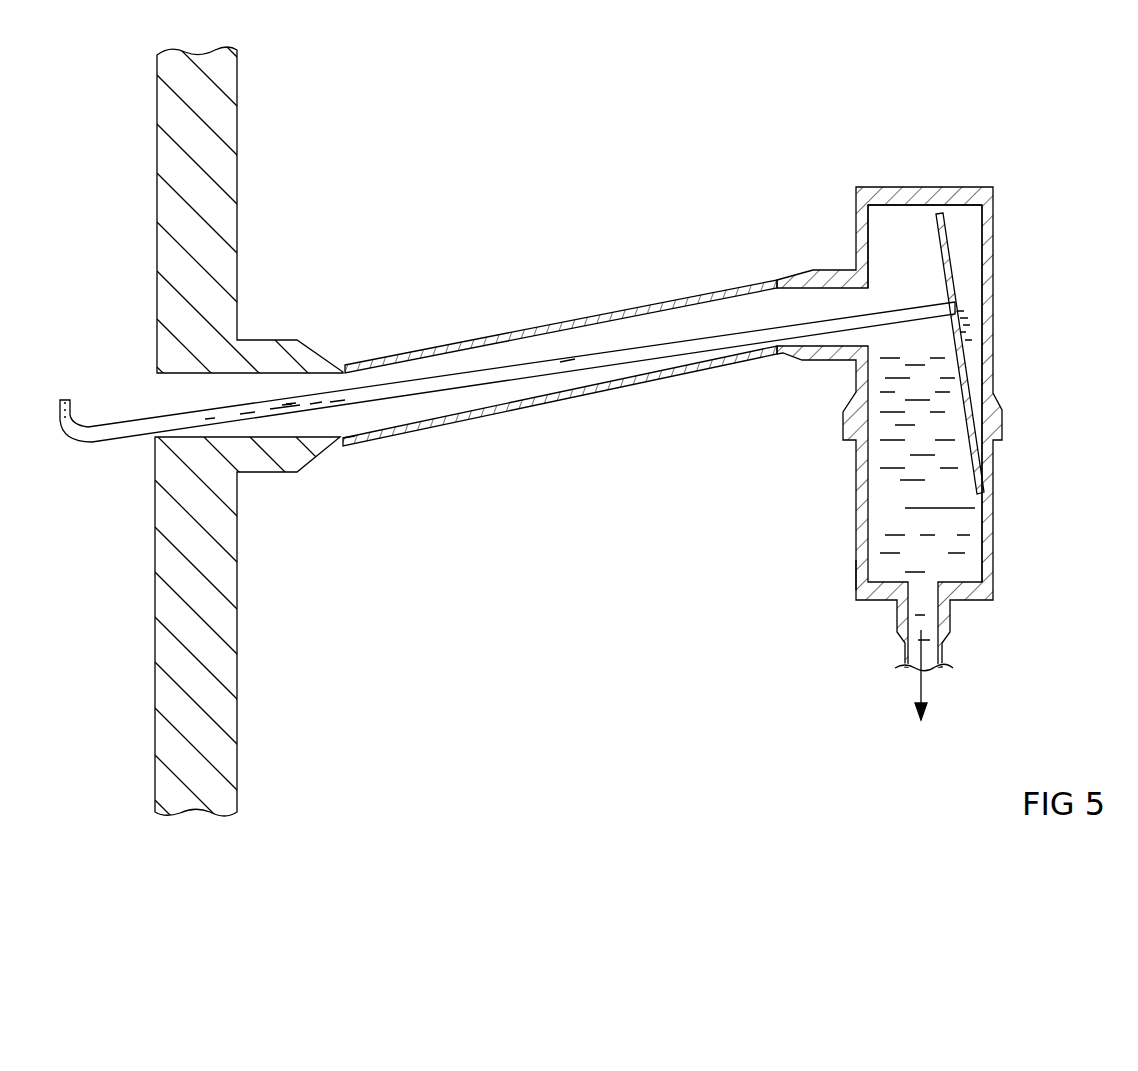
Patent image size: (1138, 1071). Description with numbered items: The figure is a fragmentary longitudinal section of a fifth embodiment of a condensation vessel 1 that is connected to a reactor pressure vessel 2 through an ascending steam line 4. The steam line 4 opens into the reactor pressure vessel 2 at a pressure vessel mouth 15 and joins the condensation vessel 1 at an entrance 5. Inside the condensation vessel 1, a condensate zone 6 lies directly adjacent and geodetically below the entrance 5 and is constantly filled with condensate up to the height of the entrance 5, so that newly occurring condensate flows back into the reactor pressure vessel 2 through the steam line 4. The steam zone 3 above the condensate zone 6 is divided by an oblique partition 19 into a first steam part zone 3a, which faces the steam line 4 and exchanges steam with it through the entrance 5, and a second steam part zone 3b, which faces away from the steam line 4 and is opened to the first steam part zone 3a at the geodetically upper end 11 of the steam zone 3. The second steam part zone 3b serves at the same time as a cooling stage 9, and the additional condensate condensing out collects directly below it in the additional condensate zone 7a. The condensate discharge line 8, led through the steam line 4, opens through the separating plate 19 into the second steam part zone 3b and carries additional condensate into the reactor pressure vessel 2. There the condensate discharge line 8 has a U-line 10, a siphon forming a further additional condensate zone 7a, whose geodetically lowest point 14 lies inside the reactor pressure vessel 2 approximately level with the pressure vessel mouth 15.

The condensation vessel 1 is at (856, 576).
The reactor pressure vessel 2 is at (193, 628).
The steam zone 3 is at (895, 463).
The first steam part zone 3a is at (888, 233).
The second steam part zone 3b is at (965, 235).
The steam line 4 is at (697, 315).
The entrance 5 is at (808, 308).
The condensate zone 6 is at (905, 508).
The additional condensate zone 7a is at (293, 400).
The condensate discharge line 8 is at (567, 360).
The cooling stage 9 is at (970, 268).
The U-line 10 is at (494, 379).
The geodetically upper end 11 is at (917, 222).
The lowest point 14 is at (98, 445).
The pressure vessel mouth 15 is at (342, 430).
The oblique partition 19 is at (968, 370).